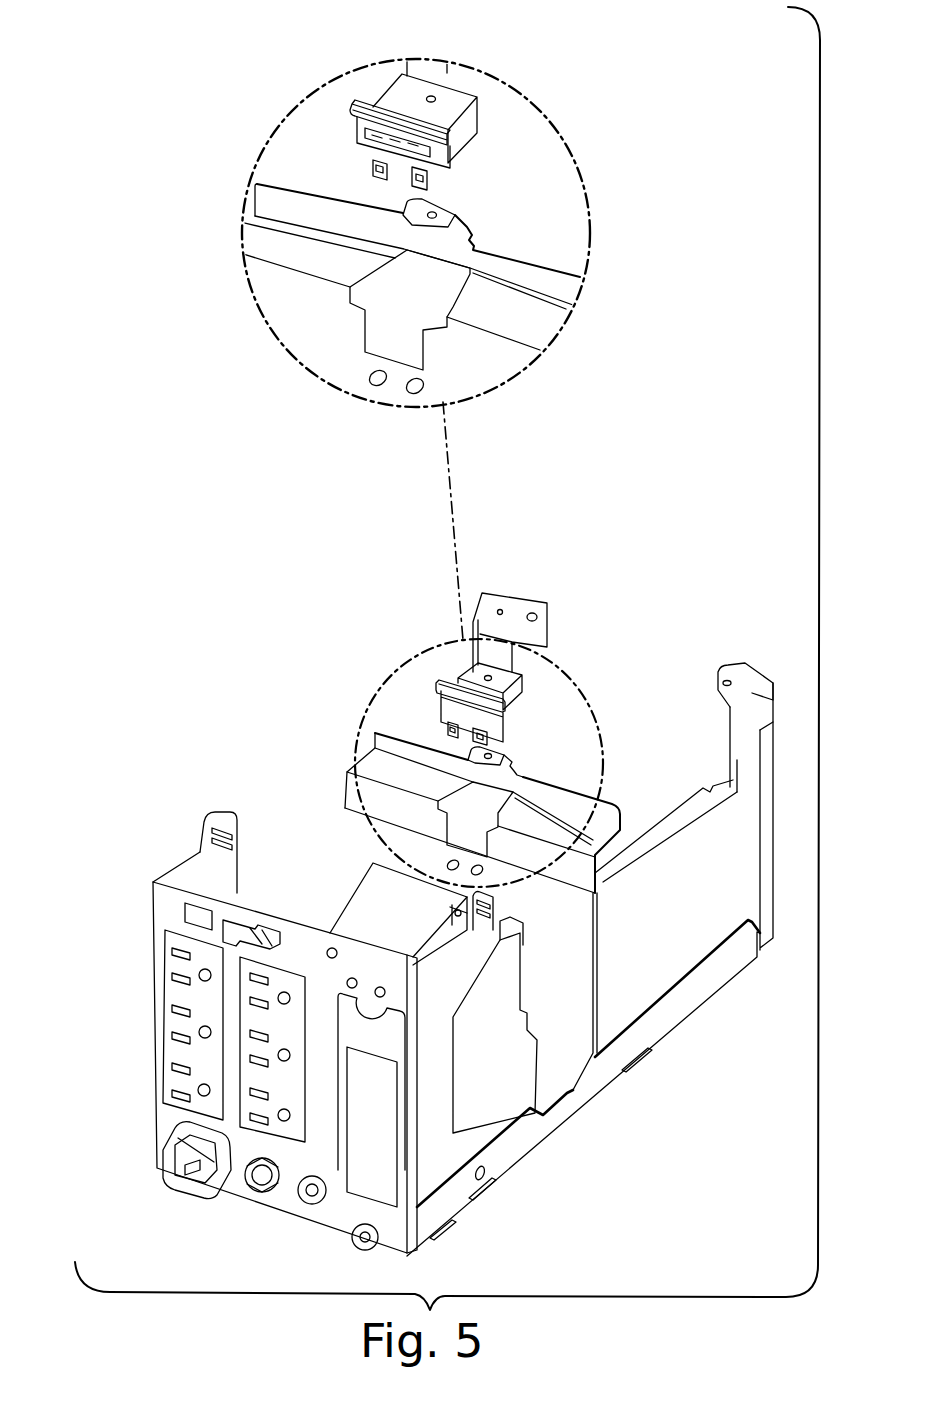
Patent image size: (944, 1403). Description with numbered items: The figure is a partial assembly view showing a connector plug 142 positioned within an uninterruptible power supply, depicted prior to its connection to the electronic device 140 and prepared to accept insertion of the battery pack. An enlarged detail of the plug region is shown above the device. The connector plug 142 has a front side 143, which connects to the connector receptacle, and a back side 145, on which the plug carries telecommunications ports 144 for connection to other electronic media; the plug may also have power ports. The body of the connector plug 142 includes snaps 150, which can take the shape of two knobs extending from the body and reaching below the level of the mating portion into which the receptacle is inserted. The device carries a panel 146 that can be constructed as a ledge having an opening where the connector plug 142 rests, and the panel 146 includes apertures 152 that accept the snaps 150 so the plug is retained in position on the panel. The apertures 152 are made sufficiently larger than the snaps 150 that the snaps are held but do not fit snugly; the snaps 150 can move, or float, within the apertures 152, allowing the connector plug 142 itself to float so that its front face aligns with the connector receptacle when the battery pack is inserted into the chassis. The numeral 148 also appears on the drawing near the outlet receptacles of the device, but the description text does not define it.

The electronic device 140 is at (650, 628).
The connector plug 142 is at (402, 100).
The front side 143 is at (517, 693).
The telecommunications ports 144 is at (377, 152).
The back side 145 is at (500, 735).
The panel 146 is at (335, 333).
The outlet receptacles 148 is at (253, 1010).
The snaps 150 is at (428, 180).
The apertures 152 is at (407, 390).